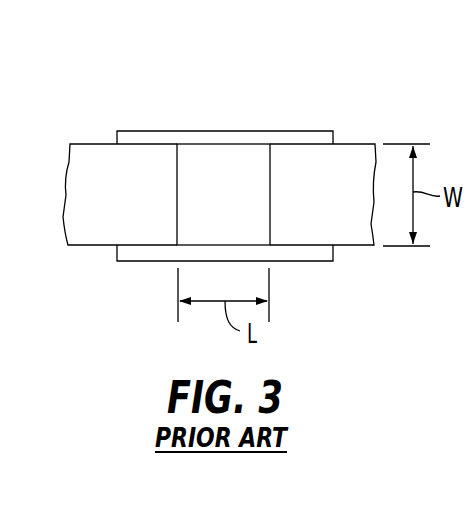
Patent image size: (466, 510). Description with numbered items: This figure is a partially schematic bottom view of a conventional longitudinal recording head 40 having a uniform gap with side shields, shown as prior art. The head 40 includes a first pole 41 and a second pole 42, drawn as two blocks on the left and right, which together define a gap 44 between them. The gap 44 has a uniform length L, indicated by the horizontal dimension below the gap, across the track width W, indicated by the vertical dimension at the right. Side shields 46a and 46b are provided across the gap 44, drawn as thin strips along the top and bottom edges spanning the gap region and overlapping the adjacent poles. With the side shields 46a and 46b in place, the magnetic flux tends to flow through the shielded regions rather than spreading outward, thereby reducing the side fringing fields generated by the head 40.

The head 40 is at (200, 113).
The first pole 41 is at (127, 210).
The second pole 42 is at (331, 212).
The gap 44 is at (231, 172).
The side shield 46a is at (295, 138).
The side shield 46b is at (302, 252).